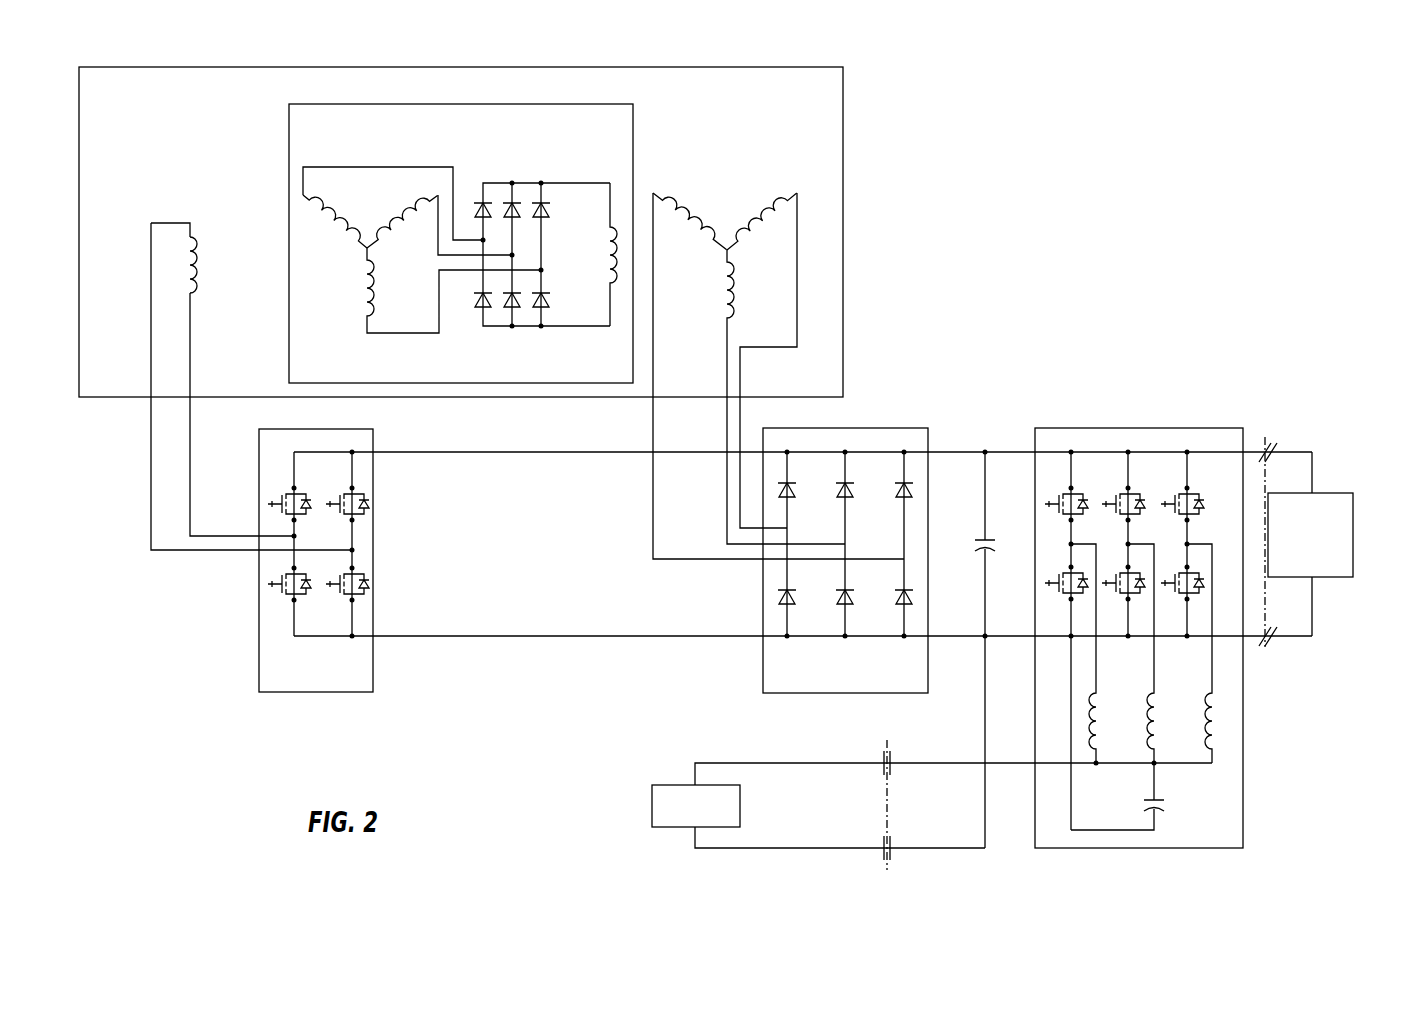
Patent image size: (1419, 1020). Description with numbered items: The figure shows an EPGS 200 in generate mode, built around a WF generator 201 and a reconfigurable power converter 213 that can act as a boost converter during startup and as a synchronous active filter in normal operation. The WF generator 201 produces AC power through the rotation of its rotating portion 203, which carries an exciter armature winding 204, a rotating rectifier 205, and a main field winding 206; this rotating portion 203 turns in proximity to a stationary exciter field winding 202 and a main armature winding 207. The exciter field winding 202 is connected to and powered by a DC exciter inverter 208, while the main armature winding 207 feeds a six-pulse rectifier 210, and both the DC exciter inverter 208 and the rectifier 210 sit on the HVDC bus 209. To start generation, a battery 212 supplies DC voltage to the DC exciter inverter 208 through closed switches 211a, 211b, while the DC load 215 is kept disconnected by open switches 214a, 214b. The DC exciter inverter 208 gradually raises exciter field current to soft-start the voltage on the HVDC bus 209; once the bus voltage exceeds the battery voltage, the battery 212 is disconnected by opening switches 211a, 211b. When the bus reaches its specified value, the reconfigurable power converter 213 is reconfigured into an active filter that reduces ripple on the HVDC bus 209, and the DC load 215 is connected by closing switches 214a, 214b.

The EPGS 200 is at (1190, 175).
The WF generator 201 is at (845, 103).
The exciter field winding 202 is at (203, 220).
The rotating portion 203 is at (332, 366).
The exciter armature winding 204 is at (377, 188).
The rotating rectifier 205 is at (528, 155).
The main field winding 206 is at (600, 262).
The main armature winding 207 is at (734, 198).
The DC exciter inverter 208 is at (315, 694).
The HVDC bus 209 is at (508, 456).
The rectifier 210 is at (818, 694).
The switch 211a is at (892, 772).
The switch 211b is at (882, 840).
The battery 212 is at (652, 805).
The reconfigurable power converter 213 is at (1243, 803).
The switch 214a is at (1272, 456).
The switch 214b is at (1272, 642).
The DC load 215 is at (1332, 578).